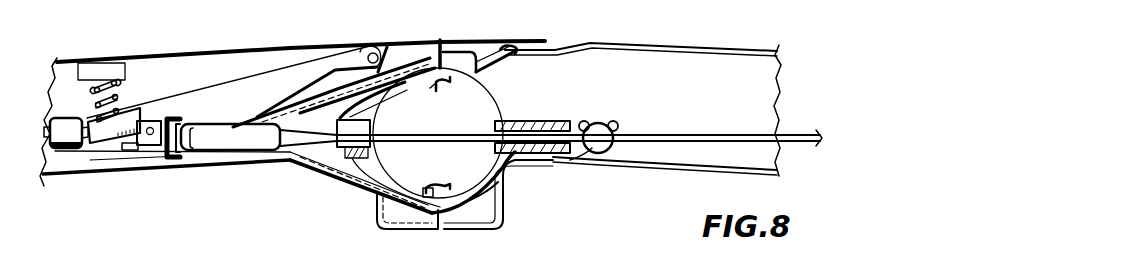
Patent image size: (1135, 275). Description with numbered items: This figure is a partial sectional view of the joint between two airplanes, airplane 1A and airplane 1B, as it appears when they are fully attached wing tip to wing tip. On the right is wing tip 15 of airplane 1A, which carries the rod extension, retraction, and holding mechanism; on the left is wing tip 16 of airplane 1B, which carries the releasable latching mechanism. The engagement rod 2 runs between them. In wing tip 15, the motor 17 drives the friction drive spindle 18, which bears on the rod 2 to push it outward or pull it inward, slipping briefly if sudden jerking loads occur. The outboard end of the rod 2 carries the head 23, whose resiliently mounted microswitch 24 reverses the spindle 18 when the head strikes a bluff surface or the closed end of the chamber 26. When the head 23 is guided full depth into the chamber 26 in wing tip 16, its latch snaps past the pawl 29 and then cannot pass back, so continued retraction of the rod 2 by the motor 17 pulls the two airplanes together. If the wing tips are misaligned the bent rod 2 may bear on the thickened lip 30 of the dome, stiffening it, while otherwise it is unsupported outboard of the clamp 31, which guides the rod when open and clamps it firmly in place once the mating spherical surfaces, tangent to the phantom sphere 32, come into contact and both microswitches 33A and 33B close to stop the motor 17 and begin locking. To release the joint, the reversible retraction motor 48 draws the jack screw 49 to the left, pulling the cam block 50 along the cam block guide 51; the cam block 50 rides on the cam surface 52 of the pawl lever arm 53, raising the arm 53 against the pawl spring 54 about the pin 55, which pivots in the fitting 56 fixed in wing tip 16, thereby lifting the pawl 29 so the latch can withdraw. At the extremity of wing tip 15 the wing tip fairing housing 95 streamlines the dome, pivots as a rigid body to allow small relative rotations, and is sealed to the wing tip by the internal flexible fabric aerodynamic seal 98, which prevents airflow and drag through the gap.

The airplane 1A is at (752, 50).
The airplane 1B is at (69, 60).
The engagement rod 2 is at (452, 136).
The wing tip 15 is at (636, 46).
The wing tip 16 is at (211, 48).
The motor 17 is at (598, 150).
The friction drive spindle 18 is at (584, 122).
The head 23 is at (287, 138).
The microswitch 24 is at (230, 137).
The chamber 26 is at (186, 120).
The pawl 29 is at (233, 125).
The lip 30 is at (373, 122).
The clamp 31 is at (531, 117).
The phantom sphere 32 is at (449, 133).
The microswitch 33A is at (430, 95).
The microswitch 33B is at (424, 183).
The reversible retraction motor 48 is at (67, 118).
The jack screw 49 is at (127, 140).
The cam block 50 is at (152, 145).
The cam block guide 51 is at (132, 153).
The cam surface 52 is at (140, 121).
The pawl lever arm 53 is at (263, 80).
The pawl spring 54 is at (120, 83).
The pin 55 is at (368, 44).
The fitting 56 is at (387, 45).
The wing tip fairing housing 95 is at (478, 45).
The internal flexible fabric aerodynamic seal 98 is at (520, 48).